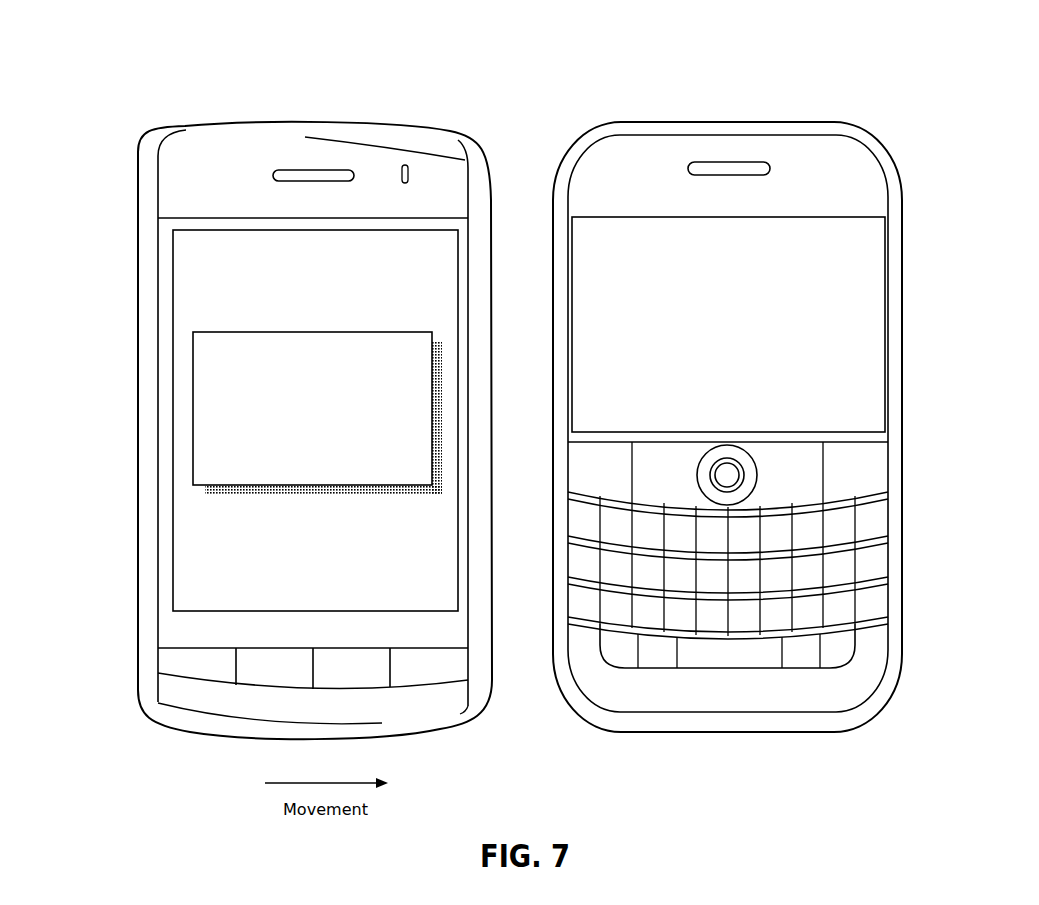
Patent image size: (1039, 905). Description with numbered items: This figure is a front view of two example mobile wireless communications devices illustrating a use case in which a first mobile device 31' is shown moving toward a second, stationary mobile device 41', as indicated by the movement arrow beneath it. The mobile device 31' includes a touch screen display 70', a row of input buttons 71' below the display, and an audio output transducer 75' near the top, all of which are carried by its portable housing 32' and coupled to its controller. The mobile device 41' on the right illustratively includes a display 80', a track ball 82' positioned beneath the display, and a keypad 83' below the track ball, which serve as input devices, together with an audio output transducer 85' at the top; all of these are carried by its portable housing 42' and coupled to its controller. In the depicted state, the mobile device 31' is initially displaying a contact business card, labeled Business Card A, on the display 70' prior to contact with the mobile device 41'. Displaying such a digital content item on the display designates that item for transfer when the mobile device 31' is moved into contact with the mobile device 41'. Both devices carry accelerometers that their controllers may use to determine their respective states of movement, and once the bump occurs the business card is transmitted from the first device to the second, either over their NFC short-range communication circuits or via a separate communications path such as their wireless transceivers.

The mobile device 31' is at (265, 384).
The portable housing 32' is at (265, 430).
The touch screen display 70' is at (248, 420).
The input buttons 71' is at (253, 649).
The audio output transducer 75' is at (291, 126).
The mobile device 41' is at (776, 384).
The portable housing 42' is at (776, 427).
The display 80' is at (780, 324).
The track ball 82' is at (778, 463).
The keypad 83' is at (778, 580).
The audio output transducer 85' is at (749, 120).